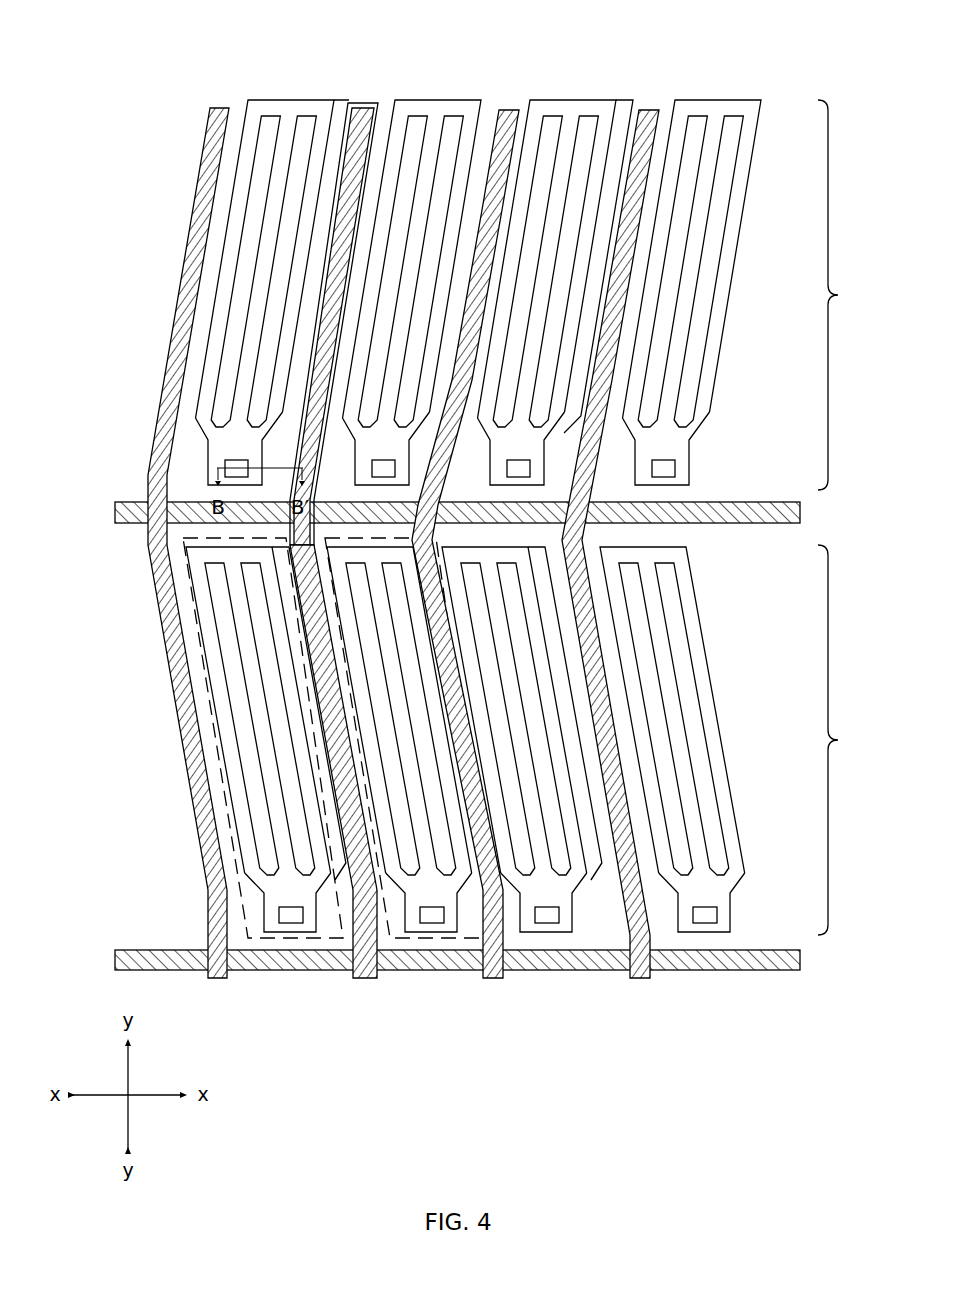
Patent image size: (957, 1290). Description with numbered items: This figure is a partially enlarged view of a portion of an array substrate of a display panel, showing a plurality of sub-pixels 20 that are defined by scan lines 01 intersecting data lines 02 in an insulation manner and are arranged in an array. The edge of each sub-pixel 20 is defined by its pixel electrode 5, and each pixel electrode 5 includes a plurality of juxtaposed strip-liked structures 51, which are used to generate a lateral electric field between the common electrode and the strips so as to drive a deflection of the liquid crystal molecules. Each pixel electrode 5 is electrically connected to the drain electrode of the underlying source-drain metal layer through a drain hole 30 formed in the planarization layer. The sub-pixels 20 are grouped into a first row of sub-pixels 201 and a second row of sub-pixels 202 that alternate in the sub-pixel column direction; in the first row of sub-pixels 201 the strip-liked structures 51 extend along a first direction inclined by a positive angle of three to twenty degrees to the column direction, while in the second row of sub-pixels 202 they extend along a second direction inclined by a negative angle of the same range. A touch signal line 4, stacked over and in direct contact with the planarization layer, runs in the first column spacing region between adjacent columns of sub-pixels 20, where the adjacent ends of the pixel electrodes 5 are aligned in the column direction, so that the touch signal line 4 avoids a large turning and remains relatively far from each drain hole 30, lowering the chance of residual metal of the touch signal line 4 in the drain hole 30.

The scan line 01 is at (150, 505).
The data line 02 is at (230, 106).
The touch signal line 4 is at (352, 100).
The pixel electrode 5 is at (292, 100).
The strip-liked structures 51 is at (722, 300).
The drain hole 30 is at (228, 468).
The sub-pixel 20 is at (292, 938).
The first row of sub-pixels 201 is at (849, 295).
The second row of sub-pixels 202 is at (849, 740).